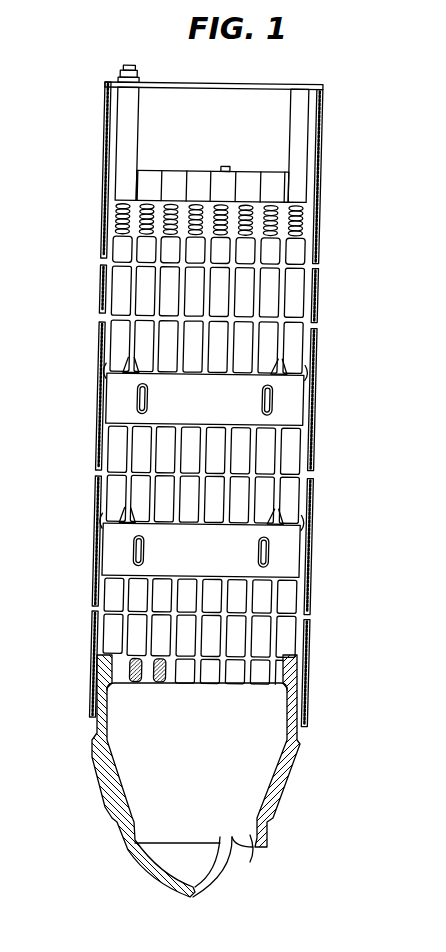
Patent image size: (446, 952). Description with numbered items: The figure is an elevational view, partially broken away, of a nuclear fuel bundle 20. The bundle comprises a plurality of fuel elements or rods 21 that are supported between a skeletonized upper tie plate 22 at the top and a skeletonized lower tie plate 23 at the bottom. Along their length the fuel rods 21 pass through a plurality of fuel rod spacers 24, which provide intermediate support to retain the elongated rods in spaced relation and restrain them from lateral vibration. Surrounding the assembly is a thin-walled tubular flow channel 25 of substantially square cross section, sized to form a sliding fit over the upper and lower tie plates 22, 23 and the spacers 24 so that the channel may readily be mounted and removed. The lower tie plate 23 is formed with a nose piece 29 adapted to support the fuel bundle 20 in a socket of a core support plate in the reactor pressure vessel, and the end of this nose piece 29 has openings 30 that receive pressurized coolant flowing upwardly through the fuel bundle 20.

The fuel bundle 20 is at (325, 152).
The fuel rods 21 is at (303, 291).
The upper tie plate 22 is at (123, 162).
The lower tie plate 23 is at (238, 677).
The fuel rod spacers 24 is at (283, 403).
The flow channel 25 is at (313, 466).
The nose piece 29 is at (277, 802).
The openings 30 is at (205, 866).